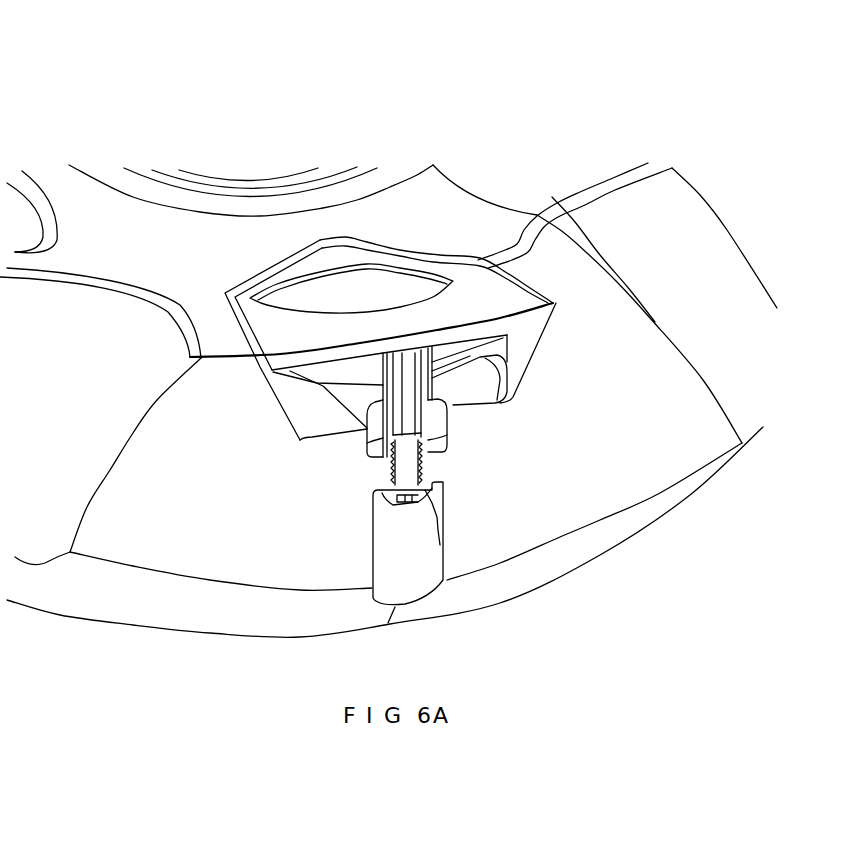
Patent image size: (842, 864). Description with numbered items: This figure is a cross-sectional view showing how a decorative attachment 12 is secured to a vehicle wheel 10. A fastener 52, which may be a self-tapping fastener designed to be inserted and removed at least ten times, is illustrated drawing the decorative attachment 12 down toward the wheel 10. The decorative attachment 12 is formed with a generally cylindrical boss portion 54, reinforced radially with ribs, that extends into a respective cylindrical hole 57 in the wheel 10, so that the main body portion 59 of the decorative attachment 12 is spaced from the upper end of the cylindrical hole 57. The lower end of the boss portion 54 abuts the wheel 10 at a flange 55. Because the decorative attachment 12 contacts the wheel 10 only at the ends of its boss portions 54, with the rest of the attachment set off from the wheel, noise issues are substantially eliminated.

The vehicle wheel 10 is at (165, 108).
The decorative attachment 12 is at (467, 287).
The main body portion 59 is at (530, 320).
The boss portion 54 is at (430, 410).
The flange 55 is at (440, 447).
The fastener 52 is at (446, 545).
The cylindrical hole 57 is at (375, 418).